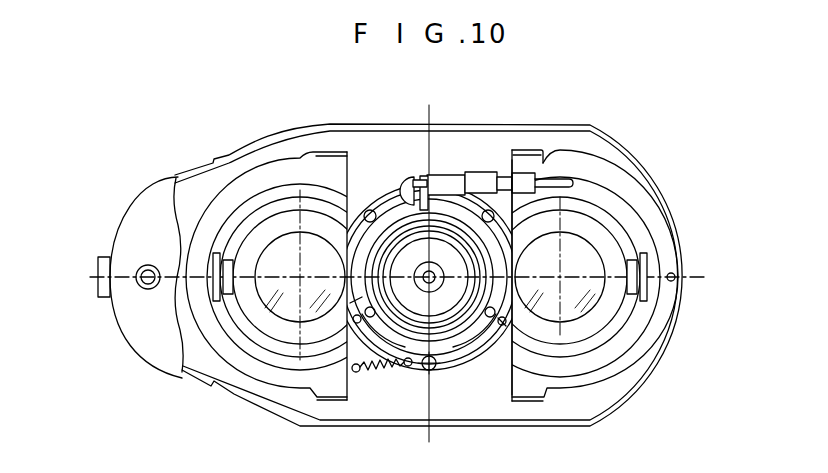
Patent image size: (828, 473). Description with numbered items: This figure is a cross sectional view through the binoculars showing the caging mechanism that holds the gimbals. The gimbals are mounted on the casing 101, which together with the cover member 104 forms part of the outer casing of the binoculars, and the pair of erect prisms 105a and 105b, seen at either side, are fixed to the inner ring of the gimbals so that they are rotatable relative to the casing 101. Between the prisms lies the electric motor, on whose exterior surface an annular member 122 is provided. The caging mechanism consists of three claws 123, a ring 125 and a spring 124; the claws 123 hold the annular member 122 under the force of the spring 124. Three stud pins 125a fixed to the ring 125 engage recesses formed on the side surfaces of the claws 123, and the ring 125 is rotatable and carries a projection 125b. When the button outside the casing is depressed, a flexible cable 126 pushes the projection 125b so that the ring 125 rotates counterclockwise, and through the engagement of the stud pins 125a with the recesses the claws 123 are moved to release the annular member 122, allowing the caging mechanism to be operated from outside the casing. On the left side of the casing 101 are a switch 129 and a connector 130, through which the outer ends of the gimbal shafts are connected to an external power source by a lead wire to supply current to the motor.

The casing 101 is at (187, 178).
The cover member 104 is at (258, 140).
The erect prism 105a is at (588, 271).
The erect prism 105b is at (328, 271).
The annular member 122 is at (473, 308).
The claws 123 is at (447, 207).
The spring 124 is at (377, 370).
The ring 125 is at (448, 300).
The stud pins 125a is at (503, 323).
The projection 125b is at (407, 186).
The flexible cable 126 is at (483, 180).
The switch 129 is at (150, 283).
The connector 130 is at (98, 265).